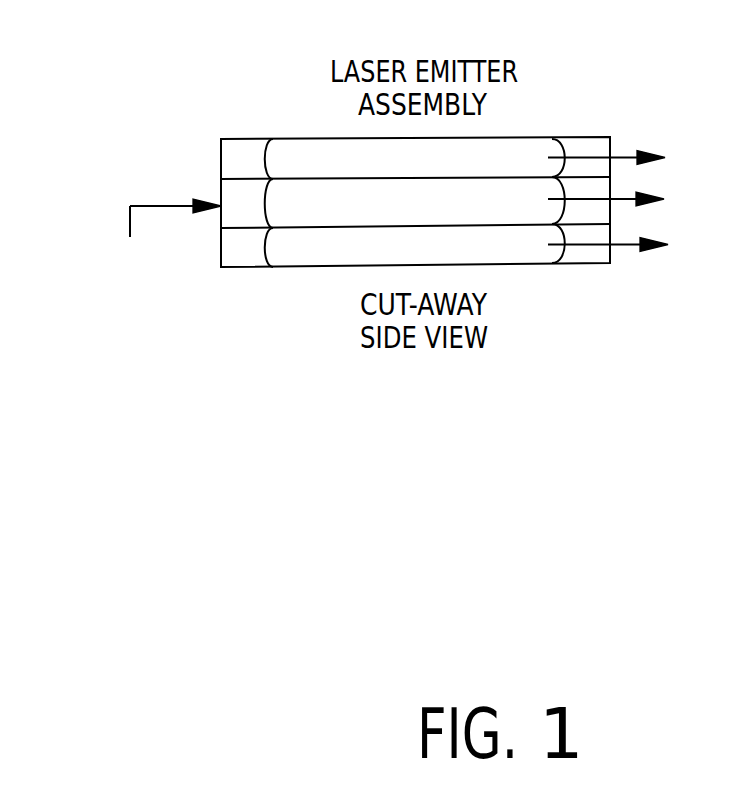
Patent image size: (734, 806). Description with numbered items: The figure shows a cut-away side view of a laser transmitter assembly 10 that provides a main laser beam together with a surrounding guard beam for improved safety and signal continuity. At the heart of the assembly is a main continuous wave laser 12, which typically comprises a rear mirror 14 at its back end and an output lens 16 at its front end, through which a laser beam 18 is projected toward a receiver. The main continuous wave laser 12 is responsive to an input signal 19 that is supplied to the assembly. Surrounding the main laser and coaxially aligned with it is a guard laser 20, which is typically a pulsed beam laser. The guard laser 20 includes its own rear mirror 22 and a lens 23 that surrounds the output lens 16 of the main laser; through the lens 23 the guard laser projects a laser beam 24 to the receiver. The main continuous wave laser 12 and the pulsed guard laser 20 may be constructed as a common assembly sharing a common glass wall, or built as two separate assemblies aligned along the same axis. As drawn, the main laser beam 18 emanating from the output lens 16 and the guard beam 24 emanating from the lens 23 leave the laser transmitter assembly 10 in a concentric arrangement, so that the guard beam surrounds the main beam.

The laser transmitter assembly 10 is at (194, 68).
The main continuous wave laser 12 is at (221, 208).
The rear mirror 14 is at (272, 226).
The output lens 16 is at (565, 191).
The laser beam 18 is at (663, 198).
The input signal 19 is at (130, 218).
The guard laser 20 is at (221, 157).
The rear mirror 22 is at (250, 139).
The lens 23 is at (566, 138).
The laser beam 24 is at (618, 153).